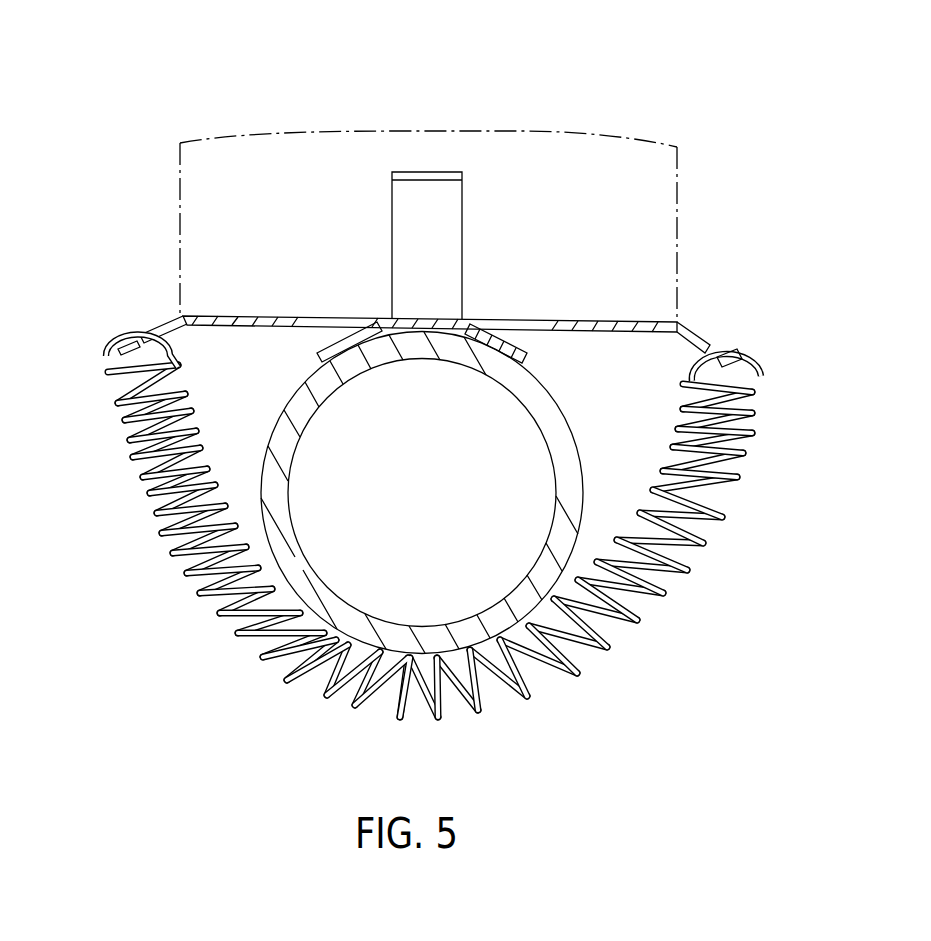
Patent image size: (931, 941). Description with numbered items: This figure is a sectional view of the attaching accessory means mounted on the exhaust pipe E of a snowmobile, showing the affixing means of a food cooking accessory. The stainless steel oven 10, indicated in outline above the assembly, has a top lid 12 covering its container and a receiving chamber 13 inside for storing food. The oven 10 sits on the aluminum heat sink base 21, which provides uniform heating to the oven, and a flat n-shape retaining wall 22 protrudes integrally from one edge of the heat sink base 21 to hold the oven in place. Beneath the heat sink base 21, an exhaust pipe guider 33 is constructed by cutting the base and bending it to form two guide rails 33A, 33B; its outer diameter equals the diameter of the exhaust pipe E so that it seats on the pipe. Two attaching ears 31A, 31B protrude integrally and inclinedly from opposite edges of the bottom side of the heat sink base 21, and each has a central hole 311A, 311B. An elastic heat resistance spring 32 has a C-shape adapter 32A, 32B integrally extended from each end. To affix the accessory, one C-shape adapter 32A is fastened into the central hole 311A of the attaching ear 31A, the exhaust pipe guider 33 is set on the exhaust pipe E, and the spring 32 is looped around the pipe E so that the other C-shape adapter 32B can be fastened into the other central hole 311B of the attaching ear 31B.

The stainless steel oven 10 is at (577, 130).
The top lid 12 is at (397, 130).
The receiving chamber 13 is at (598, 235).
The aluminum heat sink base 21 is at (249, 314).
The flat n-shape retaining wall 22 is at (438, 203).
The attaching ear 31A is at (173, 313).
The central hole 311A is at (147, 338).
The C-shape adapter 32A is at (122, 346).
The attaching ear 31B is at (690, 332).
The central hole 311B is at (735, 348).
The C-shape adapter 32B is at (758, 366).
The elastic heat resistance spring 32 is at (704, 545).
The exhaust pipe guider 33 is at (525, 337).
The guide rail 33A is at (532, 362).
The guide rail 33B is at (353, 332).
The exhaust pipe E is at (327, 692).